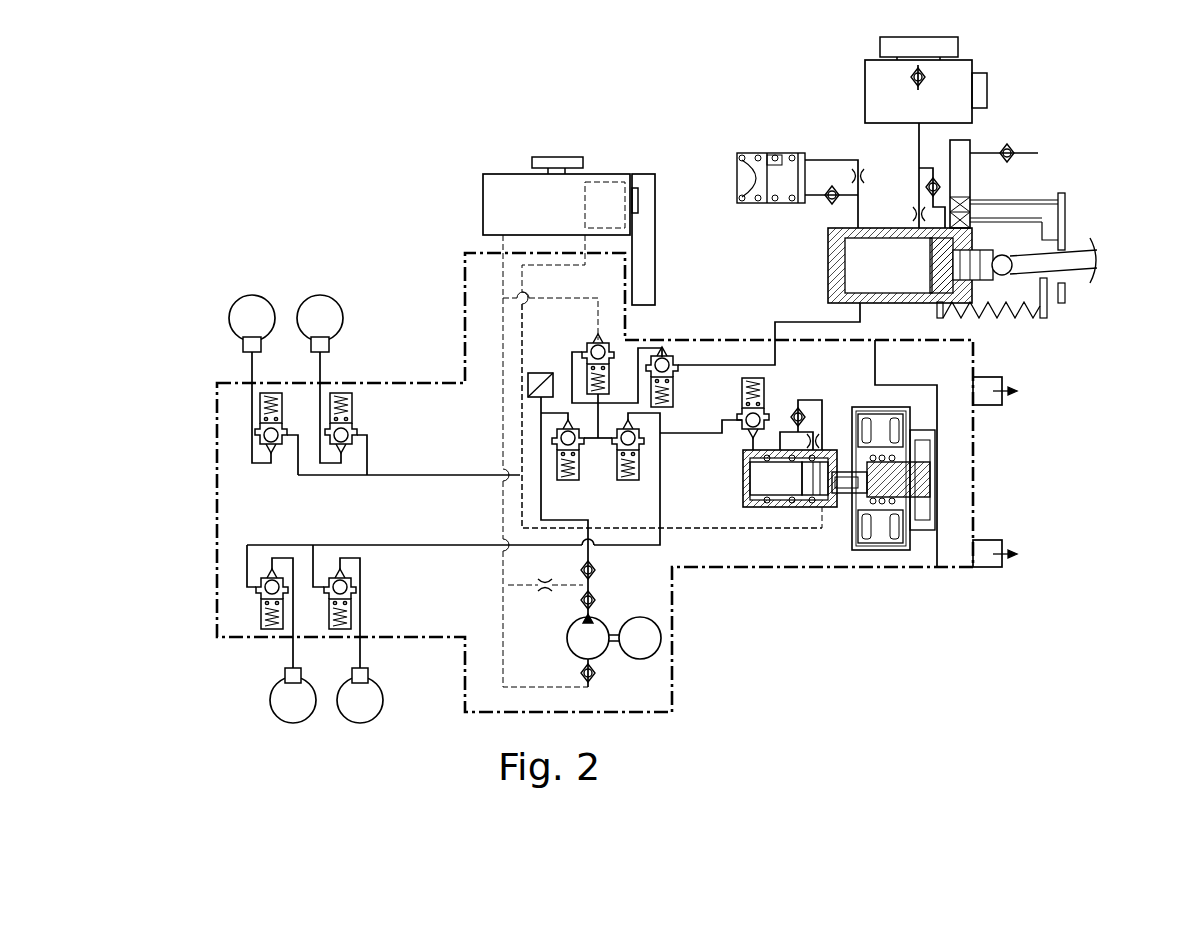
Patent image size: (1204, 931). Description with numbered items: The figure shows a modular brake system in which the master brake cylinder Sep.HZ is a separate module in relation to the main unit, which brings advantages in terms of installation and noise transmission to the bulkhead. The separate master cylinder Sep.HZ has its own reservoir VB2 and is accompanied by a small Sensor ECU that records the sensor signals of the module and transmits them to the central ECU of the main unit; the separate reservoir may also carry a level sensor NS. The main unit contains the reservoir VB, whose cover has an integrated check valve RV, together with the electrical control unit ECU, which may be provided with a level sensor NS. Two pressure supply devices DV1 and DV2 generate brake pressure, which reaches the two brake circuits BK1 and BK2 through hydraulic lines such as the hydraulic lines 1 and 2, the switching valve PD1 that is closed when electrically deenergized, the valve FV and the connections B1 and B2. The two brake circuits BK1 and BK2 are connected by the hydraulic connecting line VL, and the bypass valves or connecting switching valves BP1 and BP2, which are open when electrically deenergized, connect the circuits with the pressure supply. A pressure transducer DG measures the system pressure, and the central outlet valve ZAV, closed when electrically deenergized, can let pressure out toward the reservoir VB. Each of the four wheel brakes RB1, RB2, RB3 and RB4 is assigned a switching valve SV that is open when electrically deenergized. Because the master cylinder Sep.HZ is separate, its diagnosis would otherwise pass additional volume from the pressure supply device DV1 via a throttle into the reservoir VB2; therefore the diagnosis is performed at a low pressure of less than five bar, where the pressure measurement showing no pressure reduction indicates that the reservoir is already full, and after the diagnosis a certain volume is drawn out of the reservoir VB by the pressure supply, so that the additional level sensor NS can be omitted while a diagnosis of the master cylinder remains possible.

The wheel brake RB1 is at (300, 713).
The wheel brake RB2 is at (357, 718).
The wheel brake RB3 is at (263, 306).
The wheel brake RB4 is at (331, 306).
The switching valve SV is at (260, 407).
The brake circuit 1 BK1 is at (490, 550).
The brake circuit 2 BK2 is at (335, 485).
The reservoir VB is at (513, 172).
The level sensor NS is at (603, 182).
The electrical control unit ECU is at (645, 282).
The central outlet valve ZAV is at (592, 353).
The pressure transducer DG is at (544, 372).
The feed valve FV is at (675, 387).
The switching valve PD1 is at (767, 397).
The bypass valve 1 or connecting switching valve BP1 is at (624, 466).
The bypass valve 2 or connecting switching valve BP2 is at (564, 466).
The hydraulic connecting line VL is at (600, 443).
The hydraulic line 1 is at (690, 435).
The hydraulic line 2 is at (593, 558).
The pressure supply device DV1 is at (855, 547).
The pressure supply device DV2 is at (647, 658).
The connection B1 is at (1009, 391).
The connection B2 is at (1009, 554).
The element central ECU is at (960, 482).
The reservoir VB2 is at (960, 72).
The check valve RV is at (913, 78).
The separate master cylinder Sep.HZ is at (895, 218).
The sensor ECU Sensor ECU is at (972, 140).